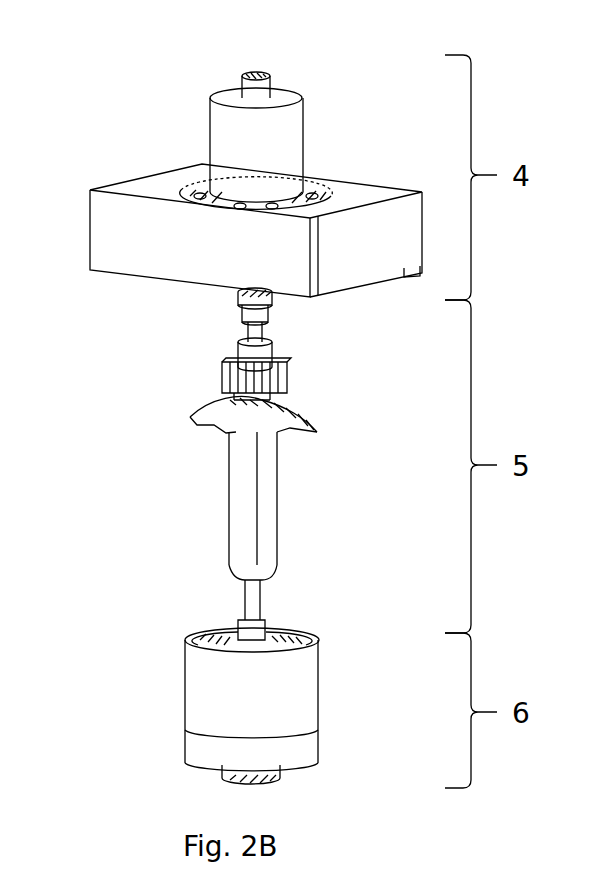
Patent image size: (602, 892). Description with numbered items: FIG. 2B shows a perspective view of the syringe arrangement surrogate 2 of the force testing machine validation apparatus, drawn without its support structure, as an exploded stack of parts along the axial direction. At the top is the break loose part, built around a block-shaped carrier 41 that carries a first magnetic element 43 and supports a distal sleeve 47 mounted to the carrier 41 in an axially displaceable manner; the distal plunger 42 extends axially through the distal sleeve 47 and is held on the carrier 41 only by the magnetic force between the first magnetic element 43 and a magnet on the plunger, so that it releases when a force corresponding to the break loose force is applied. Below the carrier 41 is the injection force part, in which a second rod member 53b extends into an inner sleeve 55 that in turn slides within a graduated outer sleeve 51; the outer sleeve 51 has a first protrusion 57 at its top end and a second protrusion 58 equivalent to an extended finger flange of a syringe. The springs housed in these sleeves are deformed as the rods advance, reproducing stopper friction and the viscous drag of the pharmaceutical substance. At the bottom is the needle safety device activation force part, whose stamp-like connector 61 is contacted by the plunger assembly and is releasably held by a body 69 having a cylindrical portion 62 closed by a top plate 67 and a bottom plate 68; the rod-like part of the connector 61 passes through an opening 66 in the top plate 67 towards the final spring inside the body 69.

The syringe arrangement surrogate 2 is at (178, 80).
The carrier 41 is at (110, 218).
The distal plunger 42 is at (258, 87).
The first magnetic element 43 is at (316, 192).
The distal sleeve 47 is at (215, 140).
The outer sleeve 51 is at (252, 532).
The second rod member 53b is at (258, 328).
The inner sleeve 55 is at (250, 355).
The first protrusion 57 is at (225, 378).
The second protrusion 58 is at (313, 430).
The connector 61 is at (252, 598).
The cylindrical portion 62 is at (212, 690).
The opening 66 is at (305, 637).
The top plate 67 is at (205, 637).
The bottom plate 68 is at (195, 742).
The body 69 is at (174, 670).